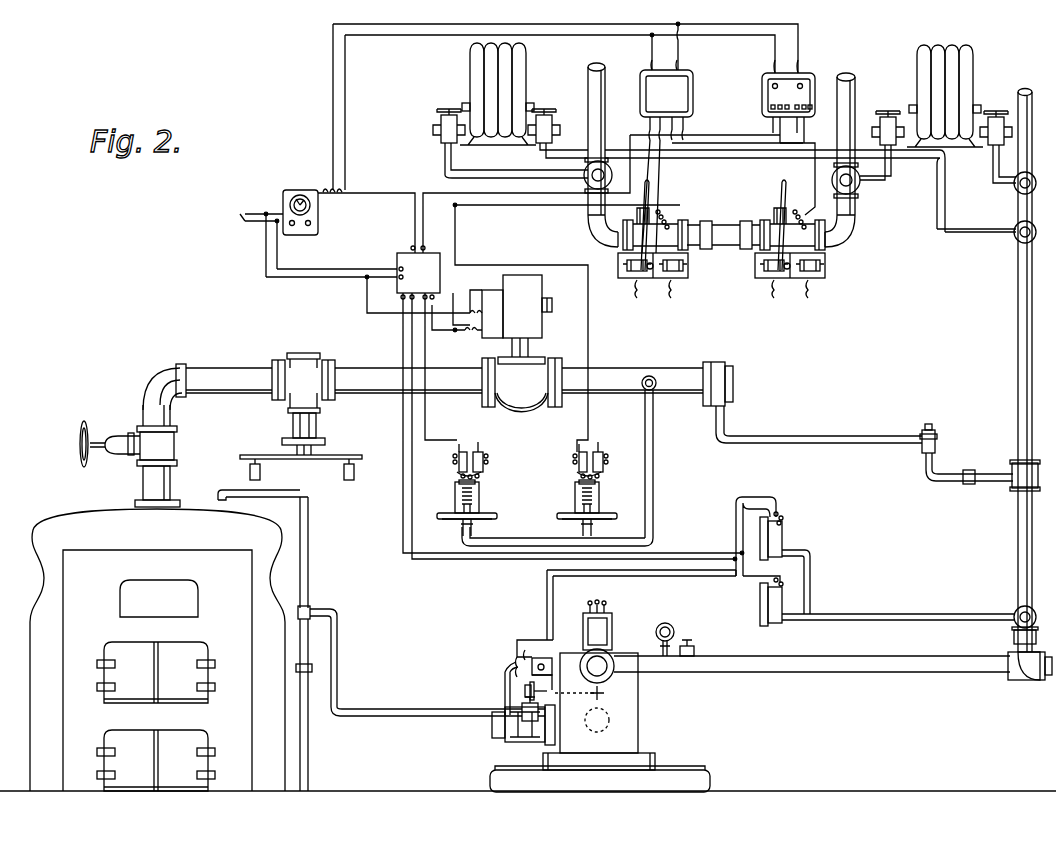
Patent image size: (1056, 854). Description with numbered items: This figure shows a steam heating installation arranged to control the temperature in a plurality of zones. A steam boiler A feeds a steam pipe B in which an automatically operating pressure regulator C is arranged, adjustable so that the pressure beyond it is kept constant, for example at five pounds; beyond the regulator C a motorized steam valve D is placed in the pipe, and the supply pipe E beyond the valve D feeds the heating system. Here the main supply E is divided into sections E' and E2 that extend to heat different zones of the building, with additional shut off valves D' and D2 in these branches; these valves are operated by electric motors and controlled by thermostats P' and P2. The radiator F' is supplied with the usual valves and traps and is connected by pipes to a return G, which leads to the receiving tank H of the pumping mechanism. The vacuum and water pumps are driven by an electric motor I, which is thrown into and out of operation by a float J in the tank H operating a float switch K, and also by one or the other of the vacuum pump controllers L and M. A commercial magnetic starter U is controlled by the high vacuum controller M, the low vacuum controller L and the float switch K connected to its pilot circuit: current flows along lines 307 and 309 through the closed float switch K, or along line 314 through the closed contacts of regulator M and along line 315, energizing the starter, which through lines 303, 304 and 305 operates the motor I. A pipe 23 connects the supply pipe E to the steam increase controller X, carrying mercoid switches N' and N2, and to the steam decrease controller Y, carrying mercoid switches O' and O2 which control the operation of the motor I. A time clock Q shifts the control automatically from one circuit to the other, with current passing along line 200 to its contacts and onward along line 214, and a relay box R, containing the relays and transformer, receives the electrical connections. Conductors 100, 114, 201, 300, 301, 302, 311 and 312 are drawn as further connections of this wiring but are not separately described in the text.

The steam boiler A is at (76, 556).
The steam pipe B is at (213, 380).
The pressure regulator C is at (318, 398).
The motorized steam valve D is at (526, 343).
The supply pipe E is at (641, 367).
The return G is at (1018, 390).
The receiving tank H is at (640, 702).
The electric motor I is at (497, 741).
The float J is at (597, 727).
The float switch K is at (530, 664).
The low vacuum controller L is at (785, 536).
The high vacuum controller M is at (764, 622).
The time clock Q is at (283, 193).
The relay box R is at (570, 403).
The magnetic starter U is at (616, 621).
The steam increase controller X is at (444, 520).
The steam decrease controller Y is at (610, 512).
The mercoid electric switch N' is at (439, 473).
The mercoid electric switch N2 is at (506, 473).
The mercoid electric switch O' is at (565, 473).
The mercoid electric switch O2 is at (626, 471).
The thermostat P' is at (716, 101).
The thermostat P2 is at (812, 76).
The steam supply branch E' is at (665, 237).
The steam supply branch E2 is at (770, 222).
The shut-off valve D' is at (697, 301).
The shut-off valve D2 is at (805, 306).
The radiator F' is at (938, 114).
The pipe 23 is at (510, 548).
The wire 100 is at (240, 214).
The wire 114 is at (244, 228).
The line 200 is at (333, 99).
The wire 201 is at (400, 205).
The line 214 is at (347, 131).
The wire 300 is at (606, 602).
The wire 301 is at (588, 612).
The coil 302 is at (572, 598).
The line 303 is at (505, 707).
The line 304 is at (524, 697).
The line 305 is at (504, 682).
The line 307 is at (530, 640).
The line 309 is at (538, 636).
The pipe 311 is at (740, 527).
The pipe 312 is at (770, 491).
The line 314 is at (783, 576).
The line 315 is at (750, 580).